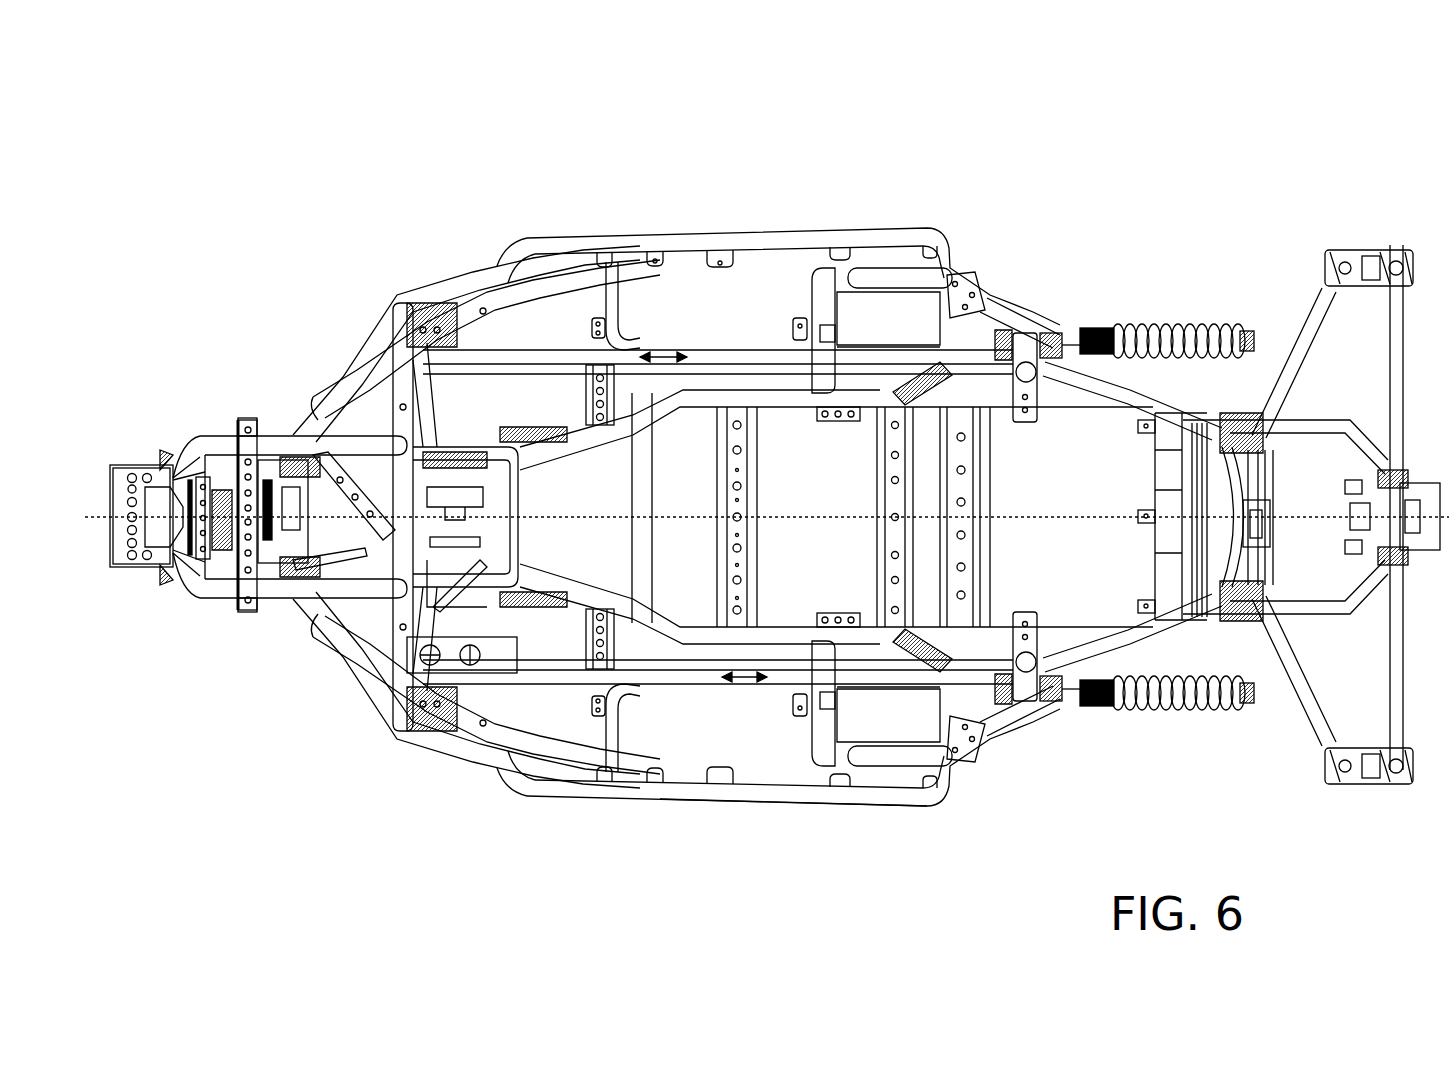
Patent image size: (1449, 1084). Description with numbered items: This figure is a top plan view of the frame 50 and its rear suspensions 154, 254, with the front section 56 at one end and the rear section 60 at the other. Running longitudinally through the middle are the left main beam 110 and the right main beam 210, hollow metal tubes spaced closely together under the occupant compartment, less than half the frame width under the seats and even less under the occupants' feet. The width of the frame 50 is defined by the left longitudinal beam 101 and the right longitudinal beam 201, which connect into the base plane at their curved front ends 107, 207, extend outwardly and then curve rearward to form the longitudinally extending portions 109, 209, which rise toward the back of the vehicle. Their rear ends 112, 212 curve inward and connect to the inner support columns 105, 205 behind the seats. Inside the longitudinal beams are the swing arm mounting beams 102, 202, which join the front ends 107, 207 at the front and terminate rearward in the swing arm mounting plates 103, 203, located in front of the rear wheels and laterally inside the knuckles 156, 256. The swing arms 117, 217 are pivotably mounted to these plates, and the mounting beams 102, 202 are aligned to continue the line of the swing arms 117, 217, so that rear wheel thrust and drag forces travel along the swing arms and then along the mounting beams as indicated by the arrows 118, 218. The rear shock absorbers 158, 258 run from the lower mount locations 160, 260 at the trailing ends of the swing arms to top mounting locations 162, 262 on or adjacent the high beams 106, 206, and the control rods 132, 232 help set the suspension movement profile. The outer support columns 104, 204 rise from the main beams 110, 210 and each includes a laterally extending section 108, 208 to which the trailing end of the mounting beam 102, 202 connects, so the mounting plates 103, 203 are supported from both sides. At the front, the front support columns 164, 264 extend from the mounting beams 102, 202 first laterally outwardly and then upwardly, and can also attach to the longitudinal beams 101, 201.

The frame 50 is at (373, 170).
The front section 56 is at (281, 314).
The rear section 60 is at (1222, 213).
The left longitudinal beam 101 is at (675, 789).
The mounting beam 102 is at (557, 673).
The swing arm mounting plate 103 is at (785, 700).
The outer support column 104 is at (880, 759).
The inner support column 105 is at (977, 660).
The high beam 106 is at (1303, 603).
The front end 107 is at (435, 685).
The laterally extending section 108 is at (822, 712).
The longitudinally extending portion 109 is at (635, 789).
The left main beam 110 is at (700, 637).
The rear end 112 is at (920, 790).
The swing arm 117 is at (993, 685).
The arrow 118 is at (733, 687).
The rear pivot or control rod 132 is at (1397, 677).
The rear suspension 154 is at (1237, 710).
The knuckle 156 is at (1370, 780).
The rear shock absorber 158 is at (1167, 709).
The rear shock lower mount location 160 is at (1247, 709).
The top mounting location 162 is at (1052, 687).
The front support column 164 is at (607, 730).
The right longitudinal beam 201 is at (672, 263).
The mounting beam 202 is at (555, 355).
The swing arm mounting plate 203 is at (800, 330).
The outer support column 204 is at (865, 320).
The inner support column 205 is at (987, 347).
The high beam 206 is at (1317, 293).
The front end 207 is at (435, 340).
The laterally extending section 208 is at (830, 286).
The longitudinally extending portion 209 is at (777, 241).
The right main beam 210 is at (695, 403).
The rear end 212 is at (918, 270).
The swing arm 217 is at (1003, 345).
The arrow 218 is at (660, 352).
The rear pivot or control rod 232 is at (1278, 297).
The rear suspension 254 is at (1238, 445).
The knuckle 256 is at (1370, 243).
The rear shock absorber 258 is at (1177, 318).
The rear shock lower mount location 260 is at (1247, 318).
The top mounting location 262 is at (1050, 355).
The front support column 264 is at (603, 290).